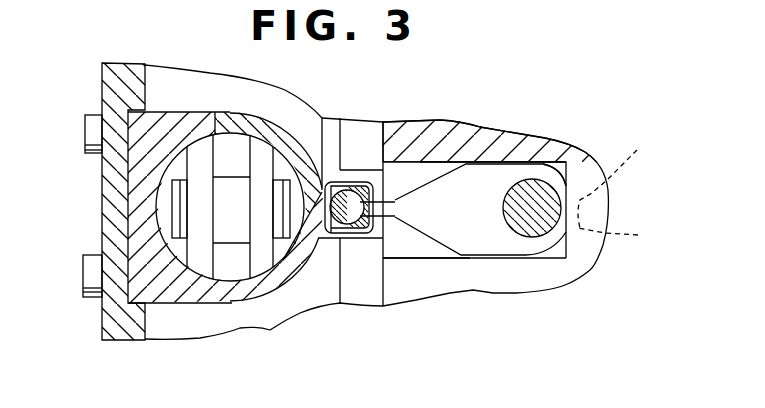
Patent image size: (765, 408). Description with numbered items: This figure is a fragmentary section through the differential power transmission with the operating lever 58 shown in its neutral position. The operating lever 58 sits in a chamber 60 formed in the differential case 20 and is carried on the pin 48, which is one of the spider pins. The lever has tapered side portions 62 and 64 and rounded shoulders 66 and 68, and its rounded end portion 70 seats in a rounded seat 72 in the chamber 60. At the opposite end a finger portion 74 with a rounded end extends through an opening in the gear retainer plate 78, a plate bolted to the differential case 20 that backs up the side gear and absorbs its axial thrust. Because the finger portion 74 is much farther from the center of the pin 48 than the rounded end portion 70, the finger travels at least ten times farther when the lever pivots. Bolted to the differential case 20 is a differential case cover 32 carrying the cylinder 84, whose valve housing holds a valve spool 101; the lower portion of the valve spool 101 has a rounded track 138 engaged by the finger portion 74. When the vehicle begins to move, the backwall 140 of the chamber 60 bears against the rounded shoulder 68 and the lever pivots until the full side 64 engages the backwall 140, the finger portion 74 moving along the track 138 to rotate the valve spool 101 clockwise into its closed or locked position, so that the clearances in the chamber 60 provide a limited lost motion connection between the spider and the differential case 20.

The differential case 20 is at (440, 121).
The differential case cover 32 is at (110, 170).
The pin 48 is at (533, 228).
The operating lever 58 is at (474, 219).
The chamber 60 is at (434, 165).
The tapered side portion 62 is at (480, 161).
The tapered side portion 64 is at (480, 262).
The rounded shoulder 66 is at (566, 150).
The rounded shoulder 68 is at (549, 240).
The rounded end portion 70 is at (620, 184).
The rounded seat 72 is at (621, 240).
The finger portion 74 is at (333, 239).
The gear retainer plate 78 is at (358, 283).
The cylinder 84 is at (137, 228).
The valve spool 101 is at (322, 118).
The rounded track 138 is at (371, 182).
The backwall 140 is at (447, 262).